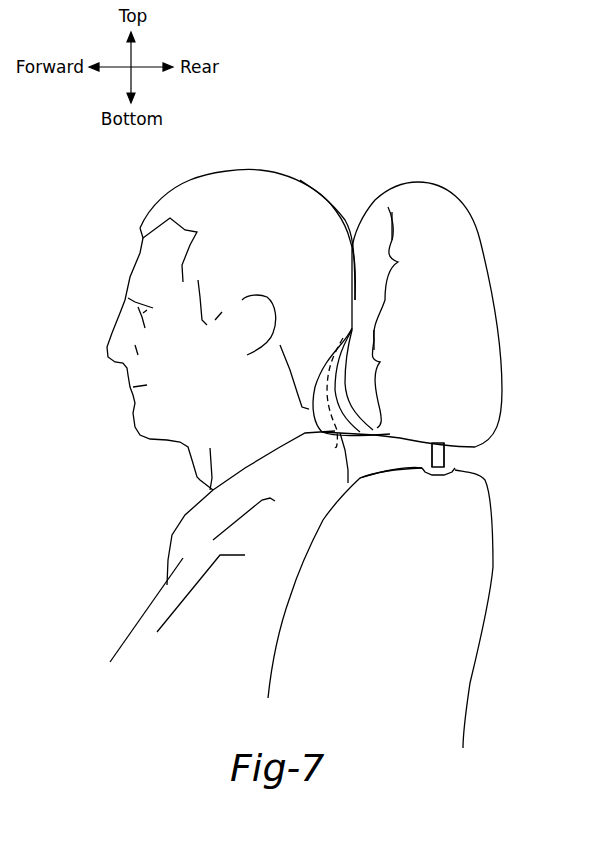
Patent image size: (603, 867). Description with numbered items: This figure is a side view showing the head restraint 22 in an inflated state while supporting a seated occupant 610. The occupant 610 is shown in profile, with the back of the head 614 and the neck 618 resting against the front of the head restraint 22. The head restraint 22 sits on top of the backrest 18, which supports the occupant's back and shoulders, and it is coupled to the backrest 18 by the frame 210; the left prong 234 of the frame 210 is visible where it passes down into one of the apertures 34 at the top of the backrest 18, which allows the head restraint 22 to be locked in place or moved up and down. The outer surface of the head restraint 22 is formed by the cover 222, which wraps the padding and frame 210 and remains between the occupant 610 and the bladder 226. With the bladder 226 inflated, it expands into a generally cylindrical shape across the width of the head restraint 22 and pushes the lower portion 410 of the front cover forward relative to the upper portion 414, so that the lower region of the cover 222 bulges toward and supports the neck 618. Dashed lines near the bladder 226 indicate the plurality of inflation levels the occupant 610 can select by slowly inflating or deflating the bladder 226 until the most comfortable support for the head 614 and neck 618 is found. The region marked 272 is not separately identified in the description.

The occupant 610 is at (220, 190).
The head 614 is at (318, 195).
The neck 618 is at (310, 414).
The head restraint 22 is at (406, 294).
The cover 222 is at (430, 215).
The front cushion 272 is at (377, 227).
The upper portion of the front cover 414 is at (415, 244).
The lower portion of the front cover 410 is at (400, 353).
The bladder 226 is at (337, 430).
The left prong 234 is at (450, 446).
The frame 210 is at (446, 466).
The apertures 34 is at (426, 472).
The backrest 18 is at (468, 585).